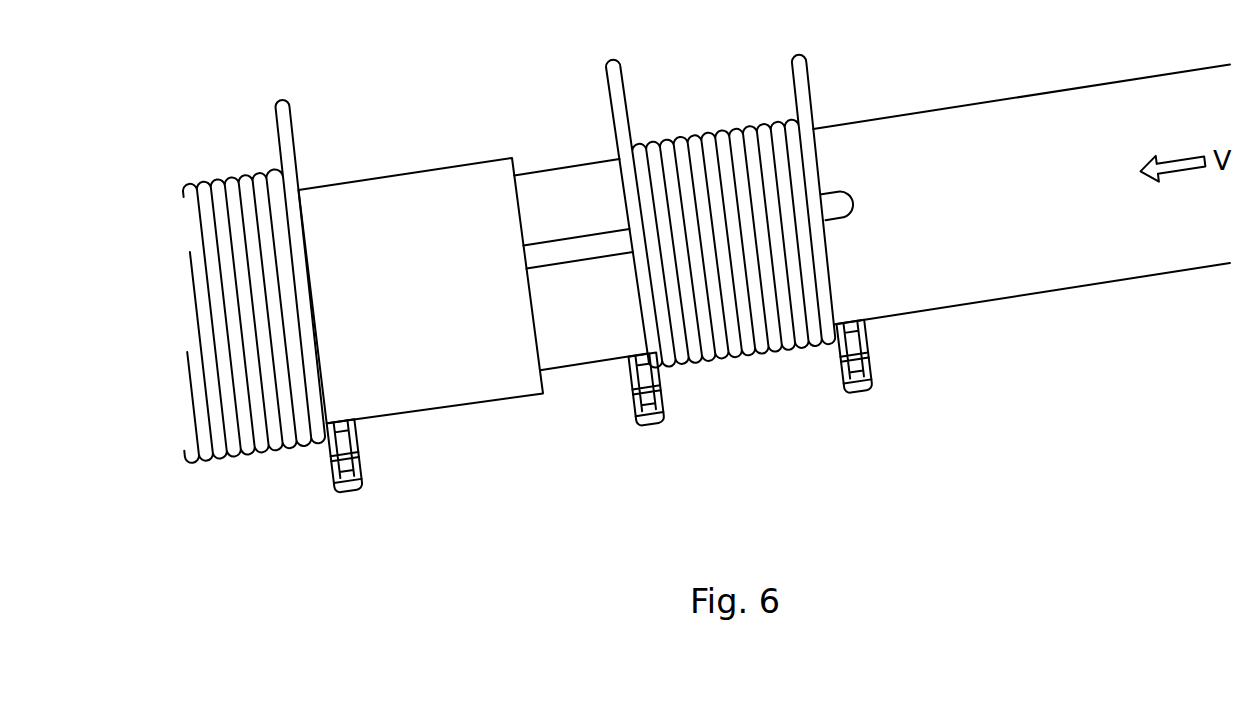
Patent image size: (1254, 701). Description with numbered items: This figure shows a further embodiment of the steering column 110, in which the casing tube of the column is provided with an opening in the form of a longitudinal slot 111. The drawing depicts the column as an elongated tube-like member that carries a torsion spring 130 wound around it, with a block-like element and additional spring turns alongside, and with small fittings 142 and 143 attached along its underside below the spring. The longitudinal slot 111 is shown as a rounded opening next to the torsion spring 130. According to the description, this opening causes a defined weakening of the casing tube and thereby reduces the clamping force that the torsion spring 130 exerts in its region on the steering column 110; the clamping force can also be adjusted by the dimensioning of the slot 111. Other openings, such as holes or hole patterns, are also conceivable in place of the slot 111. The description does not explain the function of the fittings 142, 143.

The steering column 110 is at (1088, 102).
The longitudinal slot 111 is at (832, 200).
The torsion spring 130 is at (708, 150).
The clamp 142 is at (648, 428).
The clamp 143 is at (860, 393).